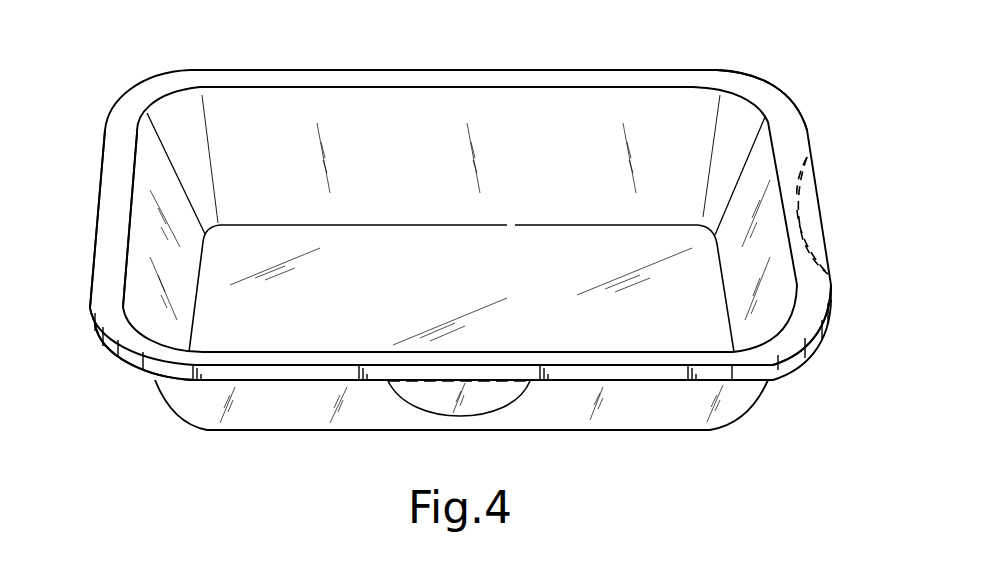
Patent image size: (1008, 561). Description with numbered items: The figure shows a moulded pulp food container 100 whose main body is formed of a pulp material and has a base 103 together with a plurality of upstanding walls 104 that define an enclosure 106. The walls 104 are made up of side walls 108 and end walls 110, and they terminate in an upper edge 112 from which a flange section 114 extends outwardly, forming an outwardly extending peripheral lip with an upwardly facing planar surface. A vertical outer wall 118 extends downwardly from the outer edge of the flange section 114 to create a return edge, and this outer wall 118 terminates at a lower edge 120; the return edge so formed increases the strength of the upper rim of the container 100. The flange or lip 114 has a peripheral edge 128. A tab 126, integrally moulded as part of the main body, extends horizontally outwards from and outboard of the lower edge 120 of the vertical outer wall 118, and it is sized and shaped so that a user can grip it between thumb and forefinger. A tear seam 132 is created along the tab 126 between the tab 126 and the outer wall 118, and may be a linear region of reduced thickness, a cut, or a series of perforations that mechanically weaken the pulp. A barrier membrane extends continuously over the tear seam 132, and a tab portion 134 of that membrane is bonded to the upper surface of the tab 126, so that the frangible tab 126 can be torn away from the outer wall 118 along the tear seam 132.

The food container 100 is at (106, 67).
The base 103 is at (485, 283).
The upstanding walls 104 is at (473, 100).
The enclosure 106 is at (248, 94).
The side walls 108 is at (370, 100).
The end walls 110 is at (143, 207).
The upper edge 112 is at (597, 85).
The flange section 114 is at (810, 302).
The vertical outer wall 118 is at (805, 353).
The lower edge 120 is at (125, 365).
The tab 126 is at (808, 208).
The peripheral edge 128 is at (802, 113).
The tear seam 132 is at (800, 178).
The tab portion 134 is at (807, 223).